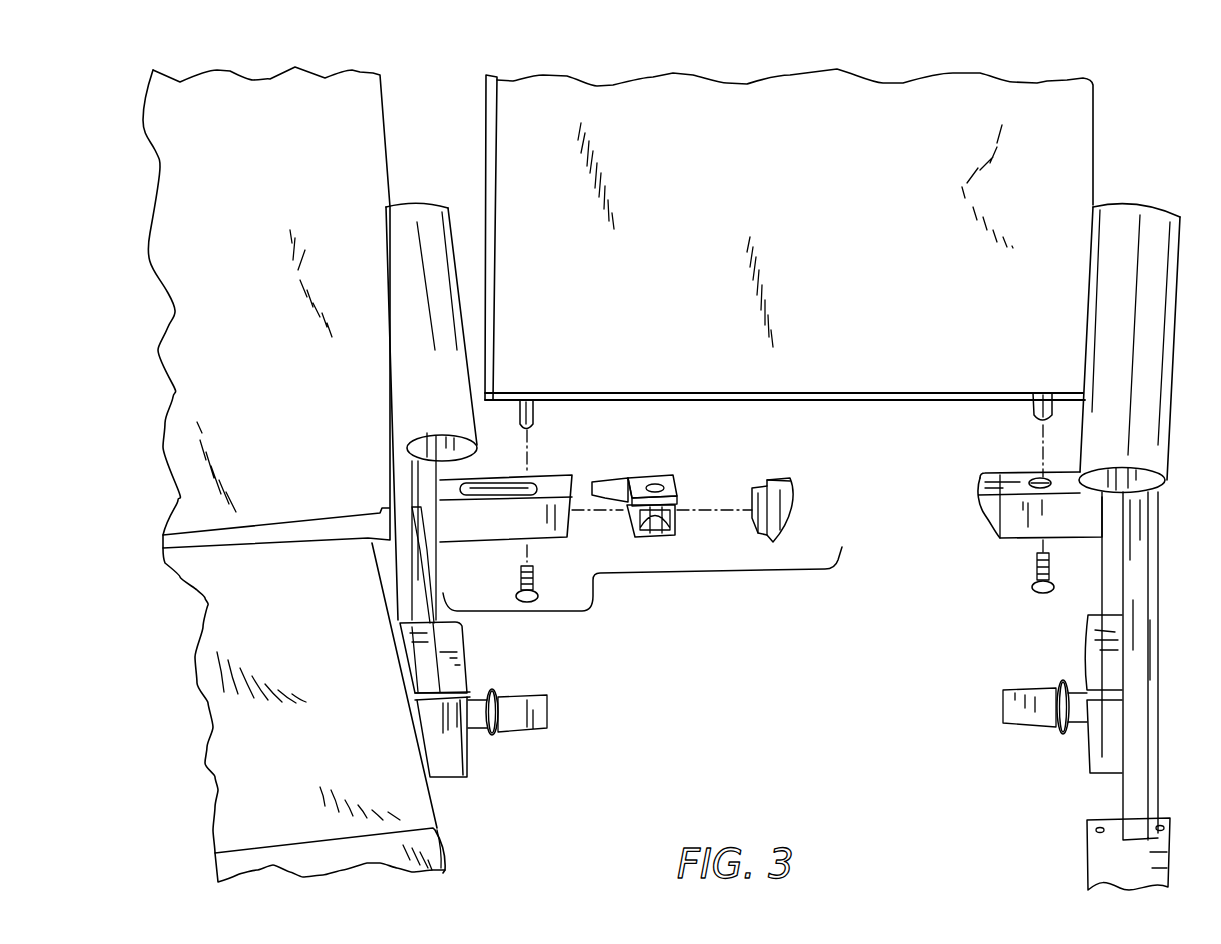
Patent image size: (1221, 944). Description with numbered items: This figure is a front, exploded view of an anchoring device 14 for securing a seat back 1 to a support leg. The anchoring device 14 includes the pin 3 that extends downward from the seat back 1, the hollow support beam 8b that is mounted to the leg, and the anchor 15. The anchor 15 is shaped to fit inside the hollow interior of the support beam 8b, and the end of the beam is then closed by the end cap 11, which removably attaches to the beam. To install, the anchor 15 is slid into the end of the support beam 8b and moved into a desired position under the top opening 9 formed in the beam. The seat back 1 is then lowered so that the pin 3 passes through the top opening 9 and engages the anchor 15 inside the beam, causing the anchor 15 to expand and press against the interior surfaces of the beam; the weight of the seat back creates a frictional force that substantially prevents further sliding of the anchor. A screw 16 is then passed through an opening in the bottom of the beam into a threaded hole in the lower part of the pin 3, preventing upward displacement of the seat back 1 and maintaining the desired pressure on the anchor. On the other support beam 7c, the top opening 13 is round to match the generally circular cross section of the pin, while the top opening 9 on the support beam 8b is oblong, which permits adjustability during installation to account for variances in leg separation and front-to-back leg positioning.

The seat back 1 is at (533, 156).
The pin 3 is at (537, 410).
The support beam 7c is at (1026, 512).
The support beam 8b is at (515, 486).
The top opening 9 is at (472, 483).
The end cap 11 is at (793, 493).
The hole 13 is at (1037, 485).
The anchoring device 14 is at (697, 569).
The anchor 15 is at (677, 490).
The screw 16 is at (516, 596).